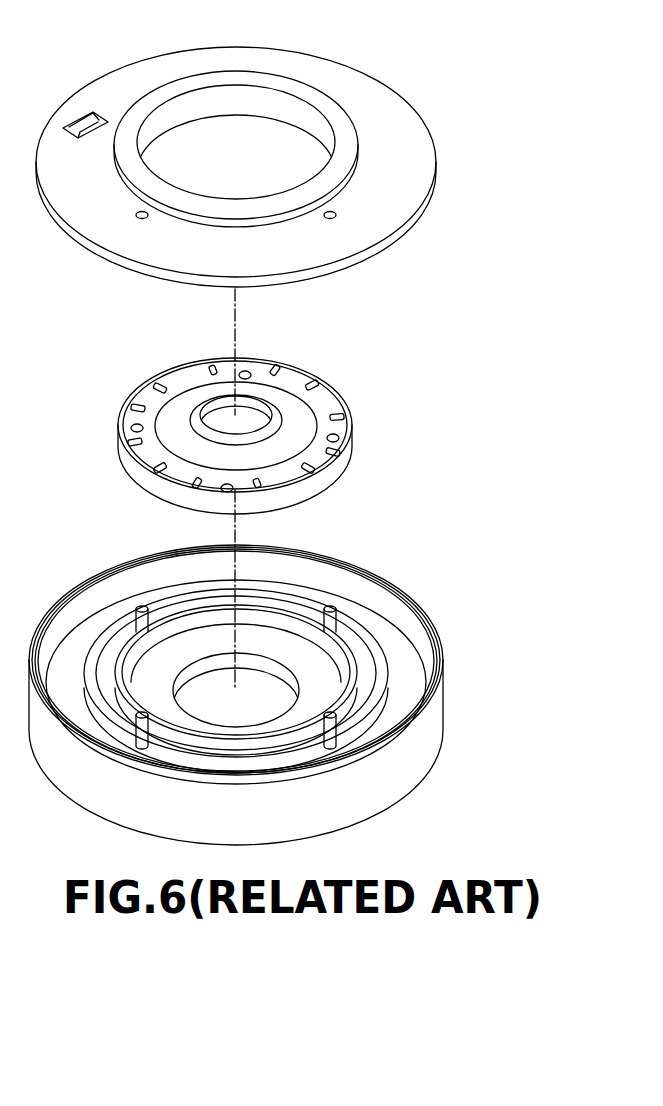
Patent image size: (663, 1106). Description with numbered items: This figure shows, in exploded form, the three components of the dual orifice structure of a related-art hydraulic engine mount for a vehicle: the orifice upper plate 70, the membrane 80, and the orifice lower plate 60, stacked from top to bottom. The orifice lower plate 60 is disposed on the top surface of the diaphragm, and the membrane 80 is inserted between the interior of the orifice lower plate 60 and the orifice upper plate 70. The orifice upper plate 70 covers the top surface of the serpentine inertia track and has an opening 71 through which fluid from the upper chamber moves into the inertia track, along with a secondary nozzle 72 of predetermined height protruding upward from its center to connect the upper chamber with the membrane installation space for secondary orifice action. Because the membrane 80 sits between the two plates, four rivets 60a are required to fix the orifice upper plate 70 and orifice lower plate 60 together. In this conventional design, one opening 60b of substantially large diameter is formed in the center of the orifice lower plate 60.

The orifice lower plate 60 is at (292, 694).
The rivets 60a is at (332, 606).
The opening 60b is at (200, 678).
The orifice upper plate 70 is at (261, 145).
The opening 71 is at (82, 126).
The secondary nozzle 72 is at (341, 134).
The membrane 80 is at (358, 400).